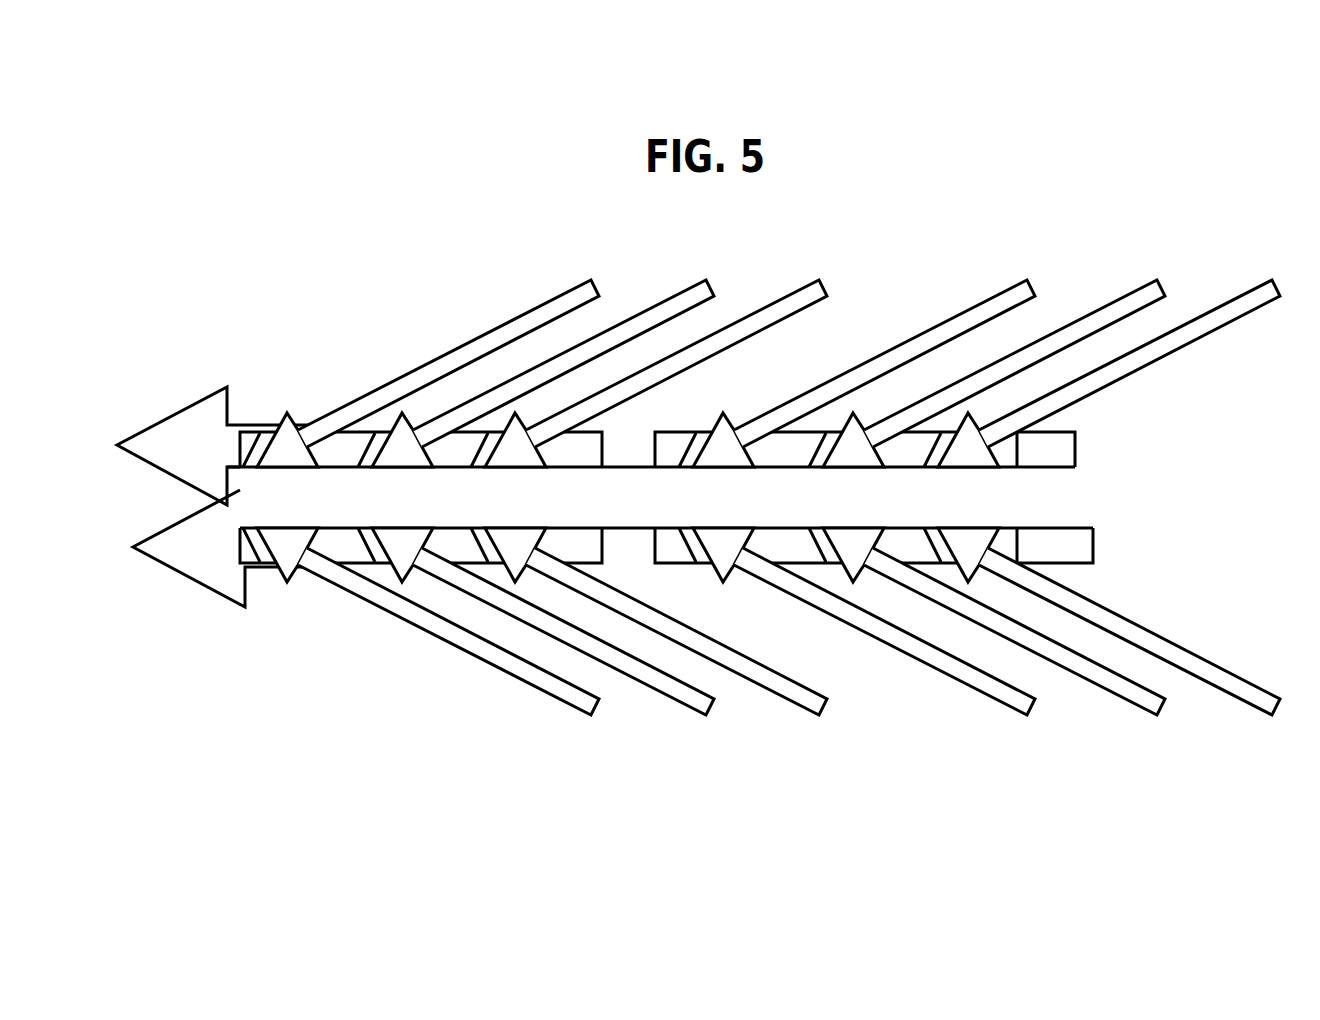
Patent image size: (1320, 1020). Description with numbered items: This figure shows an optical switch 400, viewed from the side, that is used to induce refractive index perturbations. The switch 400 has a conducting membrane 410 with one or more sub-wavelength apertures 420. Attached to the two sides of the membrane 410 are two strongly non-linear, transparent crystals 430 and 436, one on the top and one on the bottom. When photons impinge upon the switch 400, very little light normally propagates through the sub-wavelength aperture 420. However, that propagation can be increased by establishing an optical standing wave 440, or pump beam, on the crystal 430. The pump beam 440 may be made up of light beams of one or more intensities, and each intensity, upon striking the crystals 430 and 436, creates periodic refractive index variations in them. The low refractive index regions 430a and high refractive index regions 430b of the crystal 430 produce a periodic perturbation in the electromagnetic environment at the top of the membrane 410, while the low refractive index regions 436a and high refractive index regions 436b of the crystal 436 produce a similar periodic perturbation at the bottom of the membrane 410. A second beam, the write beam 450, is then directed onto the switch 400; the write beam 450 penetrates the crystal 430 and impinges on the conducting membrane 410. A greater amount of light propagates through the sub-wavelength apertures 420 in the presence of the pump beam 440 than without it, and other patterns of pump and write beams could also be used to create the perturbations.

The switch 400 is at (300, 307).
The conducting membrane 410 is at (440, 510).
The sub-wavelength aperture 420 is at (620, 510).
The crystal 430 is at (686, 448).
The low refractive index regions 430a is at (318, 452).
The high refractive index regions 430b is at (373, 452).
The crystal 436 is at (685, 548).
The low refractive index regions 436a is at (325, 537).
The high refractive index regions 436b is at (368, 537).
The optical standing wave 440 is at (163, 543).
The write beam 450 is at (596, 284).